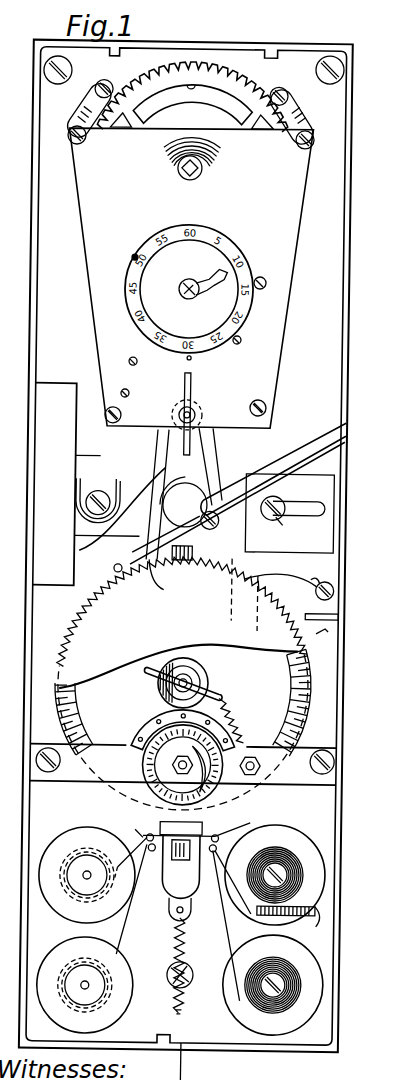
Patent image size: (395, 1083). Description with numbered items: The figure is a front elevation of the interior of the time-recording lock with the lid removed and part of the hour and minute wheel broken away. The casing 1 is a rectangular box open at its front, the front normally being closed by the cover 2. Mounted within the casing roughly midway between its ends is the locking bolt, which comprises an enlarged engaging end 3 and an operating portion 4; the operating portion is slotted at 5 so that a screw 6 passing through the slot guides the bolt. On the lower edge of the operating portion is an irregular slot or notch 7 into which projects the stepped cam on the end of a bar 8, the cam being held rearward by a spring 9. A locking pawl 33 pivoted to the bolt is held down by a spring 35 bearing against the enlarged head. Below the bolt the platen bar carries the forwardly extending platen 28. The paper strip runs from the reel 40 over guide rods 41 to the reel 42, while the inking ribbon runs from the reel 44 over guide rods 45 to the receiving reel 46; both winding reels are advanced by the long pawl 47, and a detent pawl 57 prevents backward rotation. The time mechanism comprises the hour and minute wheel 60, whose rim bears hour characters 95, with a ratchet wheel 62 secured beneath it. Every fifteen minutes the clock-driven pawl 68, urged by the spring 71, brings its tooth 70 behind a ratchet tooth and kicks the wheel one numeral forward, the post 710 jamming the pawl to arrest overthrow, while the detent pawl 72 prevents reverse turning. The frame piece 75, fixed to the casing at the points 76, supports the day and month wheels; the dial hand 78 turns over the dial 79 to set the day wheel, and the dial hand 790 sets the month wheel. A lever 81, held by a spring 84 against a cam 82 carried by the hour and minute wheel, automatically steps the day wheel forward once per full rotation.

The casing 1 is at (347, 328).
The cover 2 is at (186, 56).
The engaging end 3 is at (55, 484).
The operating portion 4 is at (292, 590).
The slot 5 is at (300, 503).
The screw 6 is at (282, 531).
The slot or notch 7 is at (387, 749).
The bar 8 is at (178, 490).
The spring 9 is at (274, 476).
The platen 28 is at (180, 866).
The locking pawl 33 is at (140, 468).
The spring 35 is at (78, 490).
The reel 40 is at (84, 984).
The guide rods 41 is at (157, 852).
The reel 42 is at (272, 984).
The reel 44 is at (86, 874).
The guide rods 45 is at (196, 819).
The receiving reel 46 is at (274, 874).
The long pawl 47 is at (220, 836).
The detent pawl 57 is at (325, 912).
The hour and minute wheel 60 is at (81, 719).
The ratchet wheel 62 is at (182, 683).
The pawl 68 is at (135, 562).
The tooth 70 is at (165, 579).
The spring 71 is at (222, 462).
The detent pawl 72 is at (324, 580).
The frame piece 75 is at (297, 783).
The points 76 is at (338, 762).
The dial hand 78 is at (196, 746).
The dial 79 is at (146, 732).
The lever 81 is at (215, 690).
The cam 82 is at (163, 696).
The spring 84 is at (236, 720).
The characters 95 is at (303, 703).
The post 710 is at (115, 569).
The dial hand 790 is at (200, 788).